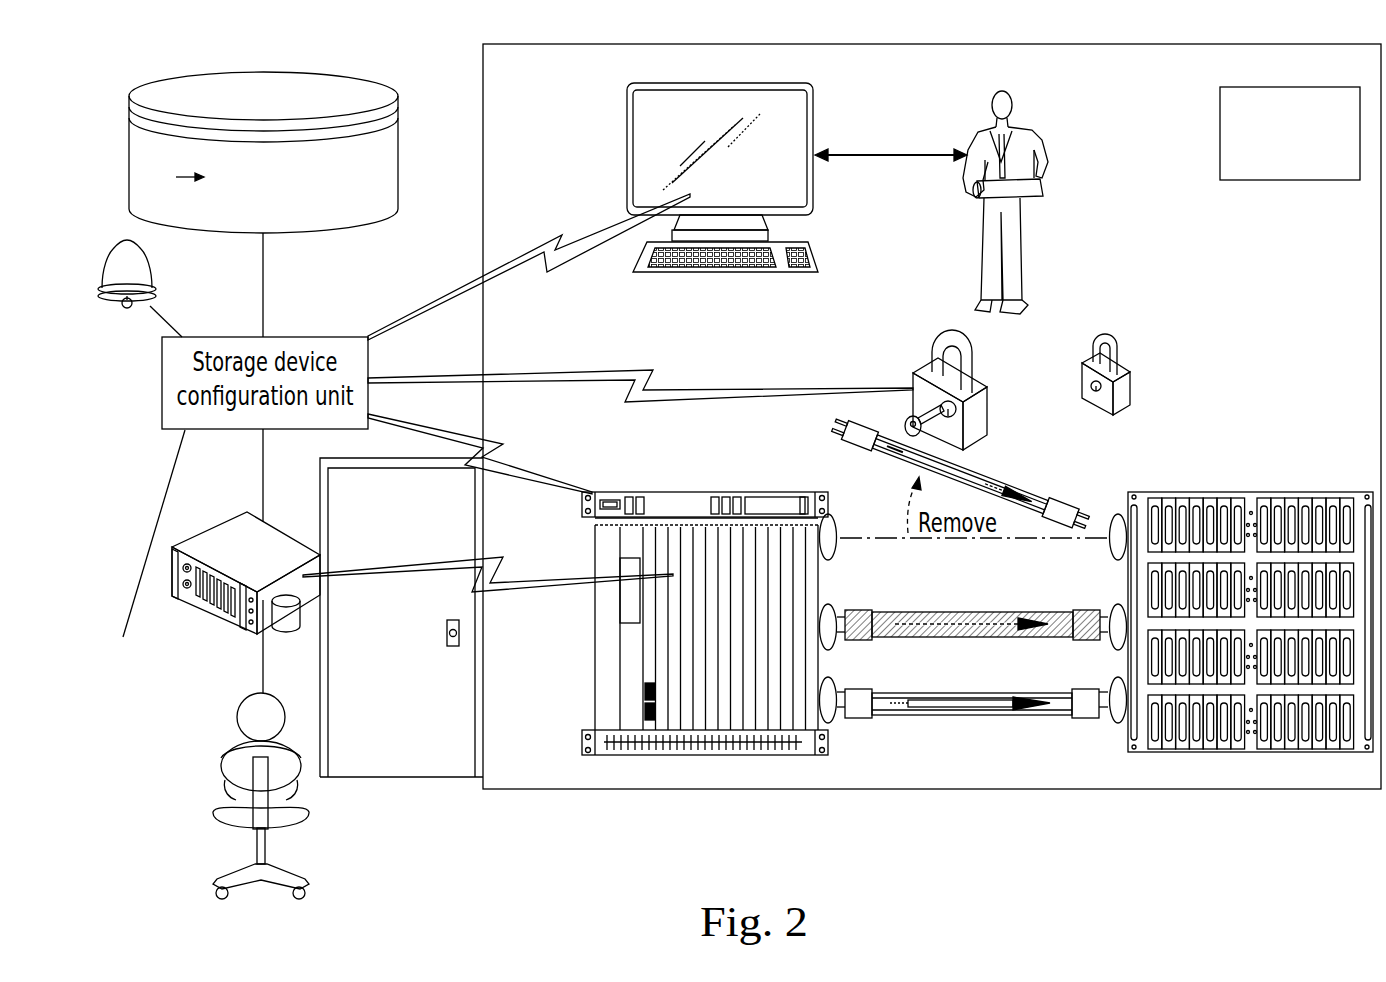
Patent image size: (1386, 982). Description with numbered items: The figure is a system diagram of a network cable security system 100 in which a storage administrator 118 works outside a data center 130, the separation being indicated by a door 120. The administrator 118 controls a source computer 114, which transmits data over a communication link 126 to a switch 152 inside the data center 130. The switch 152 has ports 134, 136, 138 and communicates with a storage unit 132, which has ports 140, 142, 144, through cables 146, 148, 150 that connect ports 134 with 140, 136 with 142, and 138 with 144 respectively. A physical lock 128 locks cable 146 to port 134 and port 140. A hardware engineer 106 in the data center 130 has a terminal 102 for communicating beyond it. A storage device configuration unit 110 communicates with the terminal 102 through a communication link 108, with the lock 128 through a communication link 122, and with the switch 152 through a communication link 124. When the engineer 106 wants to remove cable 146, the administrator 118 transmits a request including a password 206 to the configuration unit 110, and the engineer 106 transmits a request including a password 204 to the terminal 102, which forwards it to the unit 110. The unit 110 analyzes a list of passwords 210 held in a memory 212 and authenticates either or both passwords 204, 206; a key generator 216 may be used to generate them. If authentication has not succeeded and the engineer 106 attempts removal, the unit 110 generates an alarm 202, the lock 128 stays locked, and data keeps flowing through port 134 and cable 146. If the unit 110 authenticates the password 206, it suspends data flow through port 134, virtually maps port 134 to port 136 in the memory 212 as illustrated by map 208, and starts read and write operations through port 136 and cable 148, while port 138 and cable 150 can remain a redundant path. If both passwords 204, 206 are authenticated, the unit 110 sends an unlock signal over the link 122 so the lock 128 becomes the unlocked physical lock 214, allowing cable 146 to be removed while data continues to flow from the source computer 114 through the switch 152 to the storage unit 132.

The network cable security system 100 is at (373, 55).
The terminal 102 is at (626, 141).
The hardware engineer 106 is at (1040, 142).
The communication link 108 is at (430, 302).
The storage device configuration unit 110 is at (245, 337).
The source computer 114 is at (228, 520).
The storage administrator 118 is at (243, 740).
The door 120 is at (412, 778).
The communication link 122 is at (672, 390).
The communication link 124 is at (560, 483).
The communication link 126 is at (542, 577).
The physical lock 128 is at (1128, 365).
The data center 130 is at (1277, 264).
The storage unit 132 is at (1263, 492).
The port 134 is at (833, 515).
The port 136 is at (830, 605).
The port 138 is at (833, 684).
The port 140 is at (1118, 514).
The port 142 is at (1112, 605).
The port 144 is at (1112, 686).
The cable 146 is at (1013, 483).
The cable 148 is at (930, 612).
The cable 150 is at (960, 693).
The switch 152 is at (595, 663).
The alarm 202 is at (105, 306).
The password 204 is at (866, 150).
The password 206 is at (131, 686).
The map 208 is at (143, 160).
The list of passwords 210 is at (370, 157).
The memory 212 is at (399, 103).
The unlocked physical lock 214 is at (987, 383).
The key generator 216 is at (1219, 152).